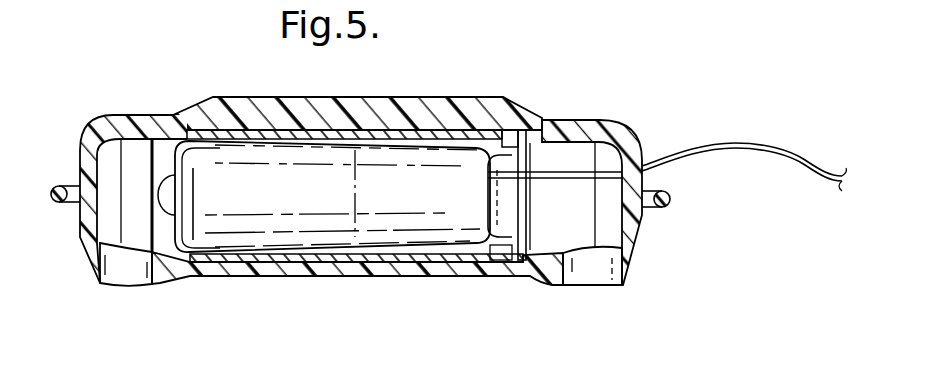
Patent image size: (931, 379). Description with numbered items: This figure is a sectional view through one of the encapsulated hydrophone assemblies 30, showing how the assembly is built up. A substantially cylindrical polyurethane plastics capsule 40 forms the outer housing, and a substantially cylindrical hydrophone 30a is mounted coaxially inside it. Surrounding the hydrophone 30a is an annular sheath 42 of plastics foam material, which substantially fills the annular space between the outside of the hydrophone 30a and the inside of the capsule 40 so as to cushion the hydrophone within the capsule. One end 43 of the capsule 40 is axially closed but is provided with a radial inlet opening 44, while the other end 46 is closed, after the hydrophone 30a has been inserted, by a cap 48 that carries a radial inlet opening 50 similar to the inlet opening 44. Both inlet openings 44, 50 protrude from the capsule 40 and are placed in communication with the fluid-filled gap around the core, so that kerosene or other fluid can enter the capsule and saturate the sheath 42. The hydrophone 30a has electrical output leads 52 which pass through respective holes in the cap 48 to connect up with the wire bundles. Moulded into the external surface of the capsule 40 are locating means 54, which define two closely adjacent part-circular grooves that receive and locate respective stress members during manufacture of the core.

The encapsulated hydrophone assembly 30 is at (572, 92).
The hydrophone 30a is at (333, 158).
The capsule 40 is at (293, 277).
The annular sheath 42 is at (423, 137).
The end of the capsule 43 is at (78, 152).
The radial inlet opening 44 is at (128, 272).
The other end of the capsule 46 is at (517, 113).
The cap 48 is at (622, 135).
The radial inlet opening 50 is at (590, 273).
The electrical output leads 52 is at (763, 152).
The locating means 54 is at (236, 82).